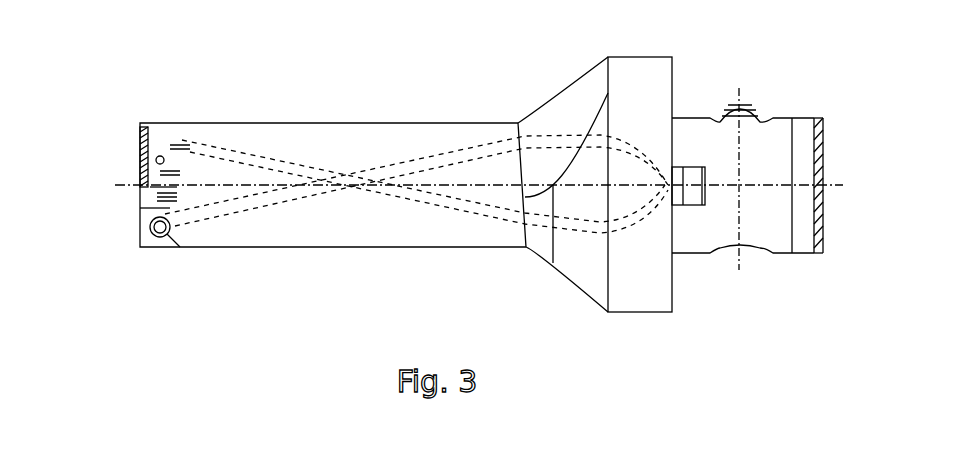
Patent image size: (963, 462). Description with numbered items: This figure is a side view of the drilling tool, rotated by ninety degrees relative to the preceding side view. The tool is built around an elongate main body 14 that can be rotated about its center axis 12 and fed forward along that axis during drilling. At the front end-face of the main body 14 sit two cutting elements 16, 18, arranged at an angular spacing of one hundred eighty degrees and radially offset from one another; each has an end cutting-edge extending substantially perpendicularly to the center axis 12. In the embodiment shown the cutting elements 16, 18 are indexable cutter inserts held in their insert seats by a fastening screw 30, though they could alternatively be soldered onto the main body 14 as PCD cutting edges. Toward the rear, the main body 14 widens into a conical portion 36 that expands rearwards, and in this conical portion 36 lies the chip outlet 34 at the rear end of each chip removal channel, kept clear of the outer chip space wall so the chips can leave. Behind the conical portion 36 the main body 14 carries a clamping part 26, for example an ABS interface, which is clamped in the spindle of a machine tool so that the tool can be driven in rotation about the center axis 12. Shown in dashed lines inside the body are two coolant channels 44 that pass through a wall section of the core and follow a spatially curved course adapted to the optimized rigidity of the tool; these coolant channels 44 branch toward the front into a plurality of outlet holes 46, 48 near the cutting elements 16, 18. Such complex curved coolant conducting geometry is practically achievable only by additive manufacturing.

The center axis 12 is at (466, 178).
The main body 14 is at (460, 122).
The cutting element 16 is at (140, 155).
The cutting element 18 is at (140, 228).
The clamping part 26 is at (782, 117).
The fastening screw 30 is at (160, 237).
The chip outlet 34 is at (573, 120).
The conical portion 36 is at (587, 292).
The coolant channel 44 is at (372, 170).
The outlet hole 46 is at (178, 157).
The outlet hole 48 is at (160, 137).